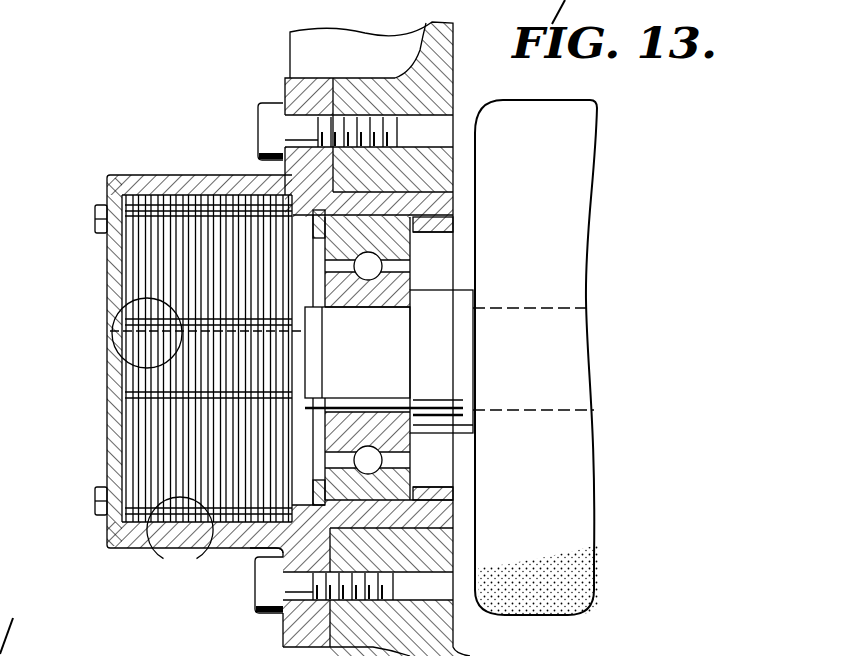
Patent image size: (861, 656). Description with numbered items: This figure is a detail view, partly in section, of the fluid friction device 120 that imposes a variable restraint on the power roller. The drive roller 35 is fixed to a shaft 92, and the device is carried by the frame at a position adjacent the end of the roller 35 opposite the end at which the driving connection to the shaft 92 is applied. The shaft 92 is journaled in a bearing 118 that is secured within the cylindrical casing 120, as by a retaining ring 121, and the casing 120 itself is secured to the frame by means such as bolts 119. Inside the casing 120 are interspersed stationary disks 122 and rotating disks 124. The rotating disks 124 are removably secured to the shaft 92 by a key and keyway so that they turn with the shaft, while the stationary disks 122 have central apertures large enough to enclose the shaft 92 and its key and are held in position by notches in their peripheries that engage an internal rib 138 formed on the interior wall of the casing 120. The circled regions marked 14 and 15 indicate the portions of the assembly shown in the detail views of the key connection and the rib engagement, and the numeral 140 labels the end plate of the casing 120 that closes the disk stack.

The detail area of FIG. 14 is at (112, 330).
The detail area of FIG. 15 is at (180, 545).
The drive roller 35 is at (562, 262).
The shaft 92 is at (357, 352).
The bearing 118 is at (403, 214).
The bolts 119 is at (272, 108).
The cylindrical casing 120 is at (157, 188).
The retaining ring 121 is at (312, 210).
The stationary disks 122 is at (145, 413).
The rotating disks 124 is at (160, 458).
The internal rib 138 is at (250, 533).
The cover plate 140 is at (107, 268).